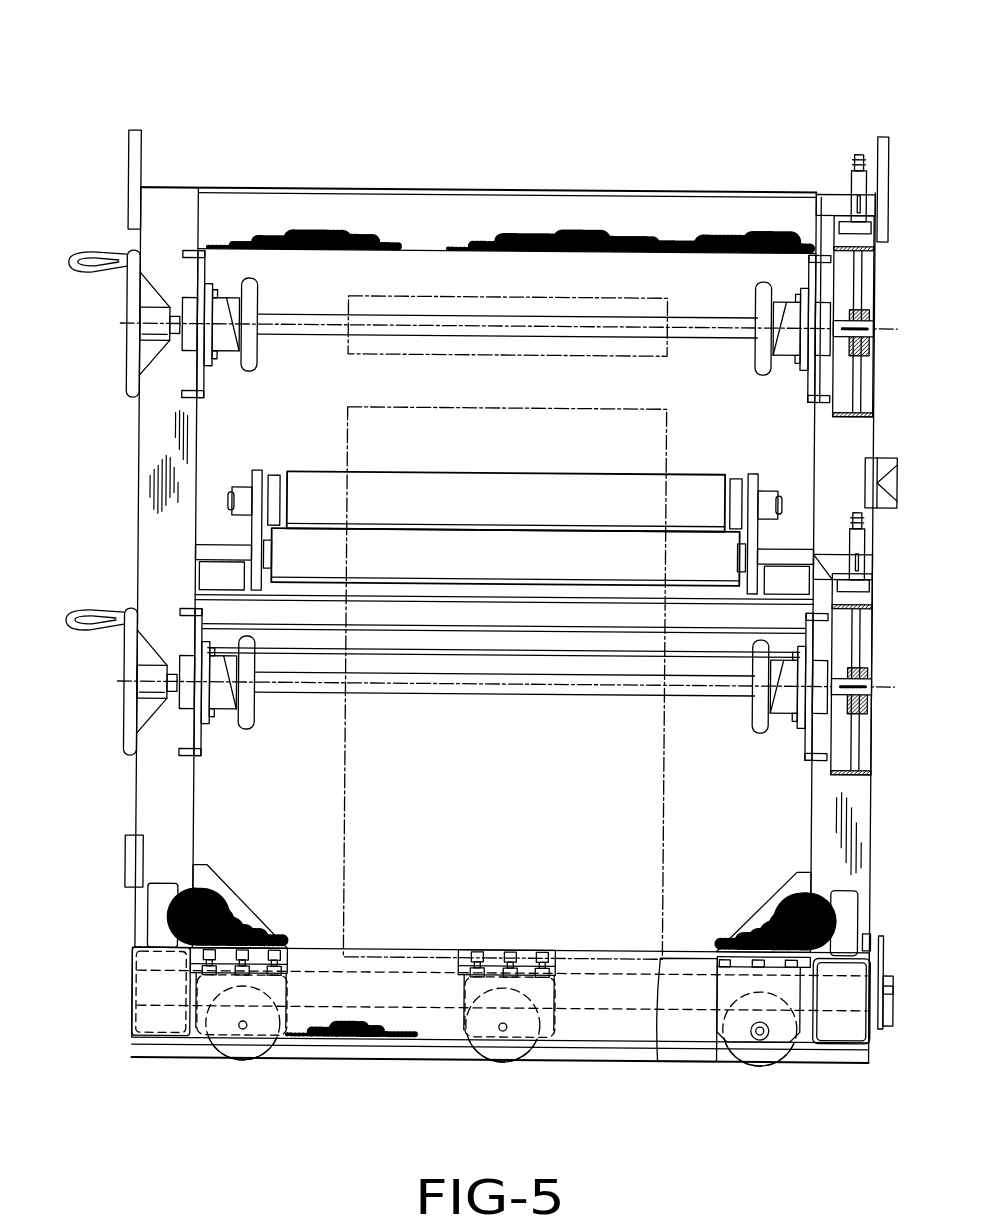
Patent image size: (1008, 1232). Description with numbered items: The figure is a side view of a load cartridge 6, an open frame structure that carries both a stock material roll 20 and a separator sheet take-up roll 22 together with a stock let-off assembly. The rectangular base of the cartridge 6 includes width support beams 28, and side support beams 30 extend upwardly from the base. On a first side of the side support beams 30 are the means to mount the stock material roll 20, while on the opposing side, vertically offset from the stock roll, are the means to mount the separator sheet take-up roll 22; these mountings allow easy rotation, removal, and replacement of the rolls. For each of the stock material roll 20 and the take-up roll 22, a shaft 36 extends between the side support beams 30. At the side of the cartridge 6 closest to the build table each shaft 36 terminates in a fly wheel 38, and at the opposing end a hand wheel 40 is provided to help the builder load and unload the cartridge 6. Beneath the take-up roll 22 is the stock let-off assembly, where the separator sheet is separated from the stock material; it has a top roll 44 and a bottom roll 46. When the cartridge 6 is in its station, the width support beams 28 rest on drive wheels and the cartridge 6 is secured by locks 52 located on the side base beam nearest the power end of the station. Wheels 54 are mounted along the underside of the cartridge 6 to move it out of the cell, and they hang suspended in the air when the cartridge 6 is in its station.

The load cartridge 6 is at (283, 117).
The stock material roll 20 is at (425, 408).
The separator sheet take-up roll 22 is at (425, 297).
The width support beams 28 is at (690, 1015).
The side support beams 30 is at (160, 800).
The shaft 36 is at (726, 332).
The fly wheel 38 is at (843, 418).
The hand wheel 40 is at (80, 262).
The top roll 44 is at (545, 500).
The bottom roll 46 is at (425, 555).
The locks 52 is at (893, 462).
The wheels 54 is at (243, 1063).